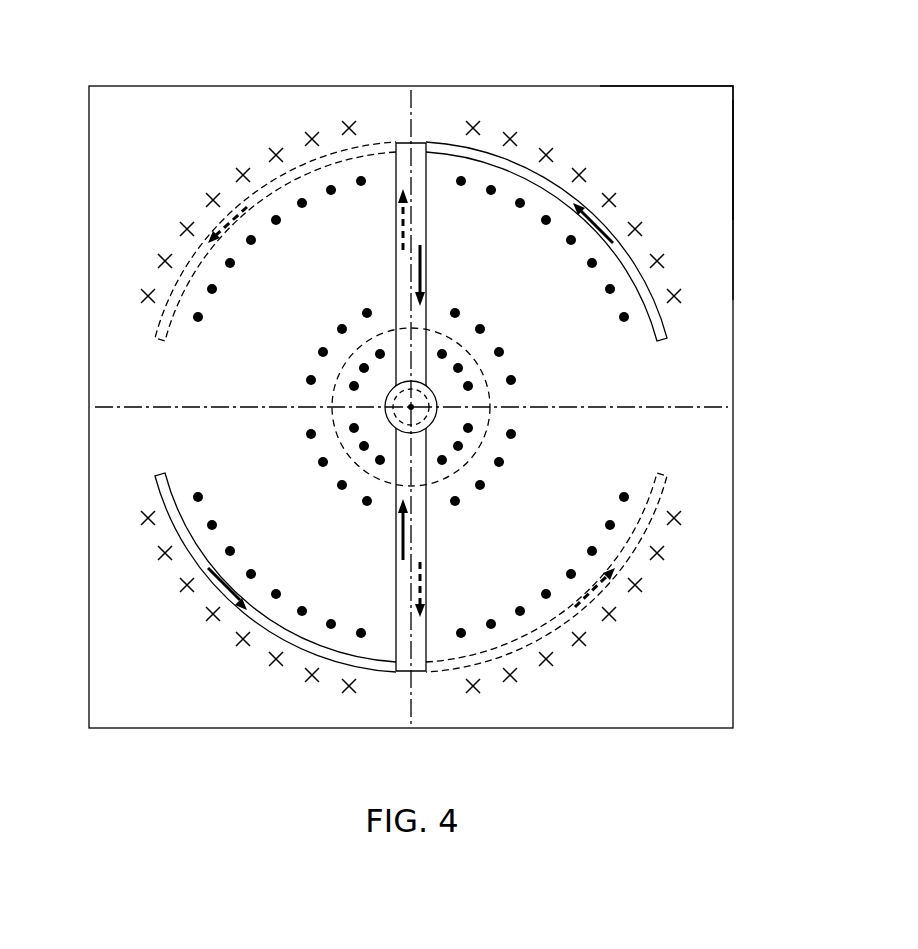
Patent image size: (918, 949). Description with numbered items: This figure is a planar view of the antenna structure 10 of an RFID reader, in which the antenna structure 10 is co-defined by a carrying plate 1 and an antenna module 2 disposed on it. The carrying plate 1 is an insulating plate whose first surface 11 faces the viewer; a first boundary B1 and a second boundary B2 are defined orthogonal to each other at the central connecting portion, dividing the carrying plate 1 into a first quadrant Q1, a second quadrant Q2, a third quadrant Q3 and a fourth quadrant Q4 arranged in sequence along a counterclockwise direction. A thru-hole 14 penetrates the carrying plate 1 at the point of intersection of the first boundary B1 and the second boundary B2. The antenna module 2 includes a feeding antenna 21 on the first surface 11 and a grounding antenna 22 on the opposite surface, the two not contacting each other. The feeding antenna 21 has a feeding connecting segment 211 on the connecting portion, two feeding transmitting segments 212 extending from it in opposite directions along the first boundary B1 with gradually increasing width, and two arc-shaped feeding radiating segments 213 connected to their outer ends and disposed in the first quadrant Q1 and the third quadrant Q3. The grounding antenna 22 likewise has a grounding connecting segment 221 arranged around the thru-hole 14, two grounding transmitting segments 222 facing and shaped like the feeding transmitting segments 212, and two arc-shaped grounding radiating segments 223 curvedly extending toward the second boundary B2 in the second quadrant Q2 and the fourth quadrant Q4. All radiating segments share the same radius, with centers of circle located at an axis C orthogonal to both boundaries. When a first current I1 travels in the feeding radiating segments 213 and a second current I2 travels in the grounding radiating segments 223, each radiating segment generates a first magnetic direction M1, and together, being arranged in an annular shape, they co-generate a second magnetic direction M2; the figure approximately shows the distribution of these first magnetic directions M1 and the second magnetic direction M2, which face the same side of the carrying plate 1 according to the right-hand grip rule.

The antenna structure 10 is at (118, 68).
The carrying plate 1 is at (651, 85).
The first surface 11 is at (703, 150).
The antenna module 2 is at (371, 44).
The feeding antenna 21 is at (373, 140).
The grounding antenna 22 is at (450, 140).
The feeding connecting segment 211 is at (433, 393).
The feeding transmitting segments 212 is at (428, 214).
The feeding radiating segments 213 is at (643, 296).
The grounding connecting segment 221 is at (397, 418).
The grounding transmitting segments 222 is at (397, 280).
The grounding radiating segments 223 is at (180, 297).
The thru-hole 14 is at (440, 422).
The axis C is at (409, 405).
The first magnetic direction M1 is at (257, 246).
The second magnetic direction M2 is at (483, 325).
The first current I1 is at (603, 225).
The second current I2 is at (210, 232).
The first quadrant Q1 is at (700, 235).
The second quadrant Q2 is at (120, 234).
The third quadrant Q3 is at (120, 581).
The fourth quadrant Q4 is at (702, 581).
The first boundary B1 is at (418, 735).
The second boundary B2 is at (722, 405).